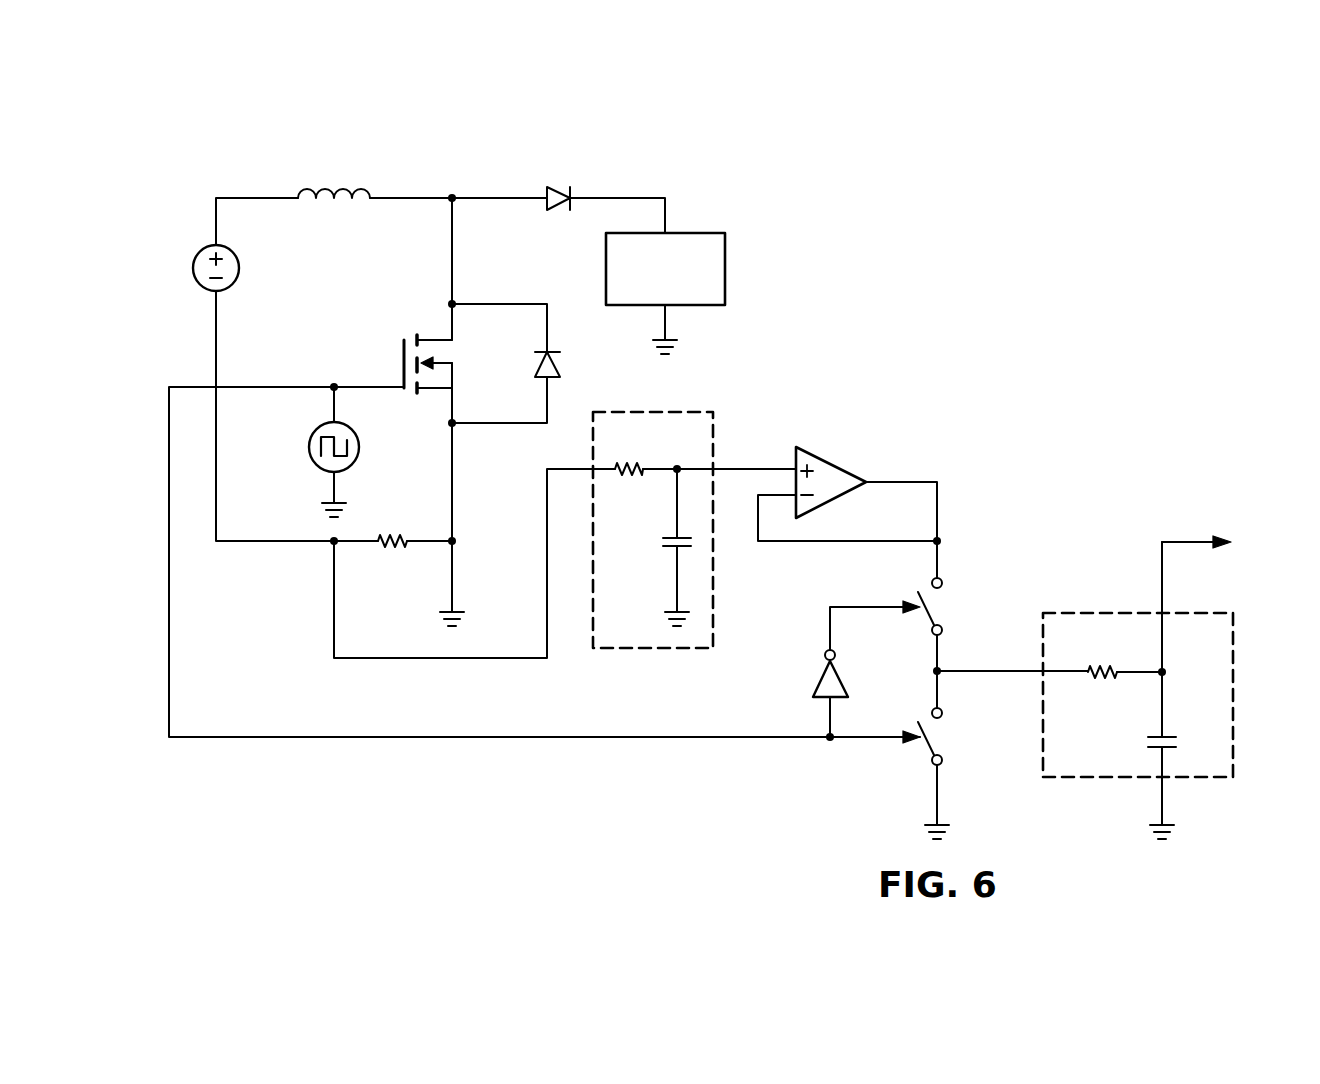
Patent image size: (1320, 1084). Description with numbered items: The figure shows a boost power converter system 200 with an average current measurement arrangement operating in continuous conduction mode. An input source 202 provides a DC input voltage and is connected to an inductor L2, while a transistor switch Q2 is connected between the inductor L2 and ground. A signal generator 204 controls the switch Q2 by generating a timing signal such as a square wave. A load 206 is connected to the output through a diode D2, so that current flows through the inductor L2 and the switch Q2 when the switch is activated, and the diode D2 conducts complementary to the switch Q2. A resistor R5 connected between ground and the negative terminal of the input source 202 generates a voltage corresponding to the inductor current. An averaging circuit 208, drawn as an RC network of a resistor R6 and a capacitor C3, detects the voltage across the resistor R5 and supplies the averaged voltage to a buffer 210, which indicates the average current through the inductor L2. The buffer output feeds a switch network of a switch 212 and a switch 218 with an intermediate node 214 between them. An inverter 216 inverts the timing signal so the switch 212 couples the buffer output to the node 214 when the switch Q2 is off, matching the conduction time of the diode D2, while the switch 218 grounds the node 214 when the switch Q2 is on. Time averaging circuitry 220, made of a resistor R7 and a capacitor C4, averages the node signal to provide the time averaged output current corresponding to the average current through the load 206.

The boost power converter system 200 is at (961, 279).
The input source 202 is at (193, 265).
The signal generator 204 is at (310, 444).
The load 206 is at (606, 266).
The averaging circuit 208 is at (622, 651).
The buffer 210 is at (833, 462).
The switch 212 is at (939, 608).
The intermediate node 214 is at (946, 680).
The inverter 216 is at (816, 680).
The switch 218 is at (922, 744).
The time averaging circuitry 220 is at (1196, 783).
The inductor L2 is at (334, 174).
The diode D2 is at (561, 183).
The transistor switch Q2 is at (480, 361).
The resistor R5 is at (392, 528).
The resistor R6 is at (630, 456).
The capacitor C3 is at (659, 540).
The resistor R7 is at (1103, 659).
The capacitor C4 is at (1181, 743).